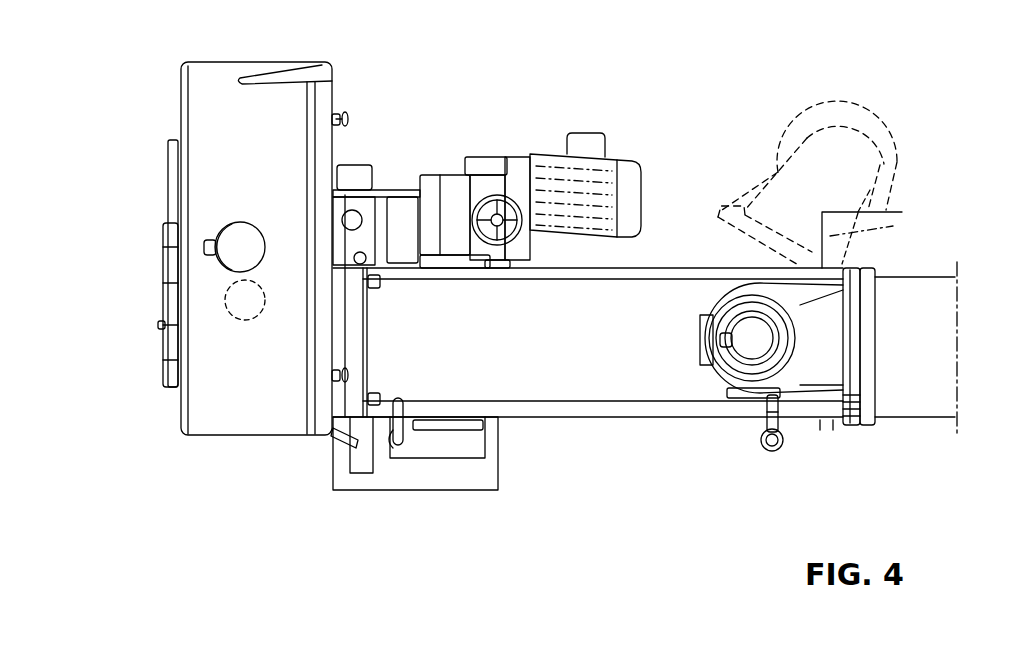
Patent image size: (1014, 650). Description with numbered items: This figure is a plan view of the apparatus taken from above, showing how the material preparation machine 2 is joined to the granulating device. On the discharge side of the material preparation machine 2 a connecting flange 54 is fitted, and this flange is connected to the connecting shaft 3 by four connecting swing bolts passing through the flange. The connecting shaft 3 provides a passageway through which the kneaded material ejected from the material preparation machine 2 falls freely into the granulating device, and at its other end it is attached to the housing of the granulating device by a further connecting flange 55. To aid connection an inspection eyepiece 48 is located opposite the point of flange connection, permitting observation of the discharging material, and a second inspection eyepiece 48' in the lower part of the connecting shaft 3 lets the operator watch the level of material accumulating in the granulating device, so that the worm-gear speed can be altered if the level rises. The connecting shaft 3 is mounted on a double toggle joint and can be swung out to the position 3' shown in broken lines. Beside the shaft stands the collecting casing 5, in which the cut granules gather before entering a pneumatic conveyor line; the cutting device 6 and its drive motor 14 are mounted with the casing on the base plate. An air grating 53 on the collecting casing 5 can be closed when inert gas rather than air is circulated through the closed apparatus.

The material preparation machine 2 is at (930, 276).
The connecting shaft 3 is at (870, 264).
The swung-out position of the connecting shaft 3' is at (807, 146).
The collecting casing 5 is at (232, 62).
The cutting device 6 is at (490, 175).
The drive motor 14 is at (598, 170).
The inspection eyepiece 48 is at (658, 350).
The second inspection eyepiece 48' is at (753, 459).
The air grating 53 is at (163, 281).
The connecting flange 54 is at (862, 268).
The connecting flange 55 is at (713, 305).